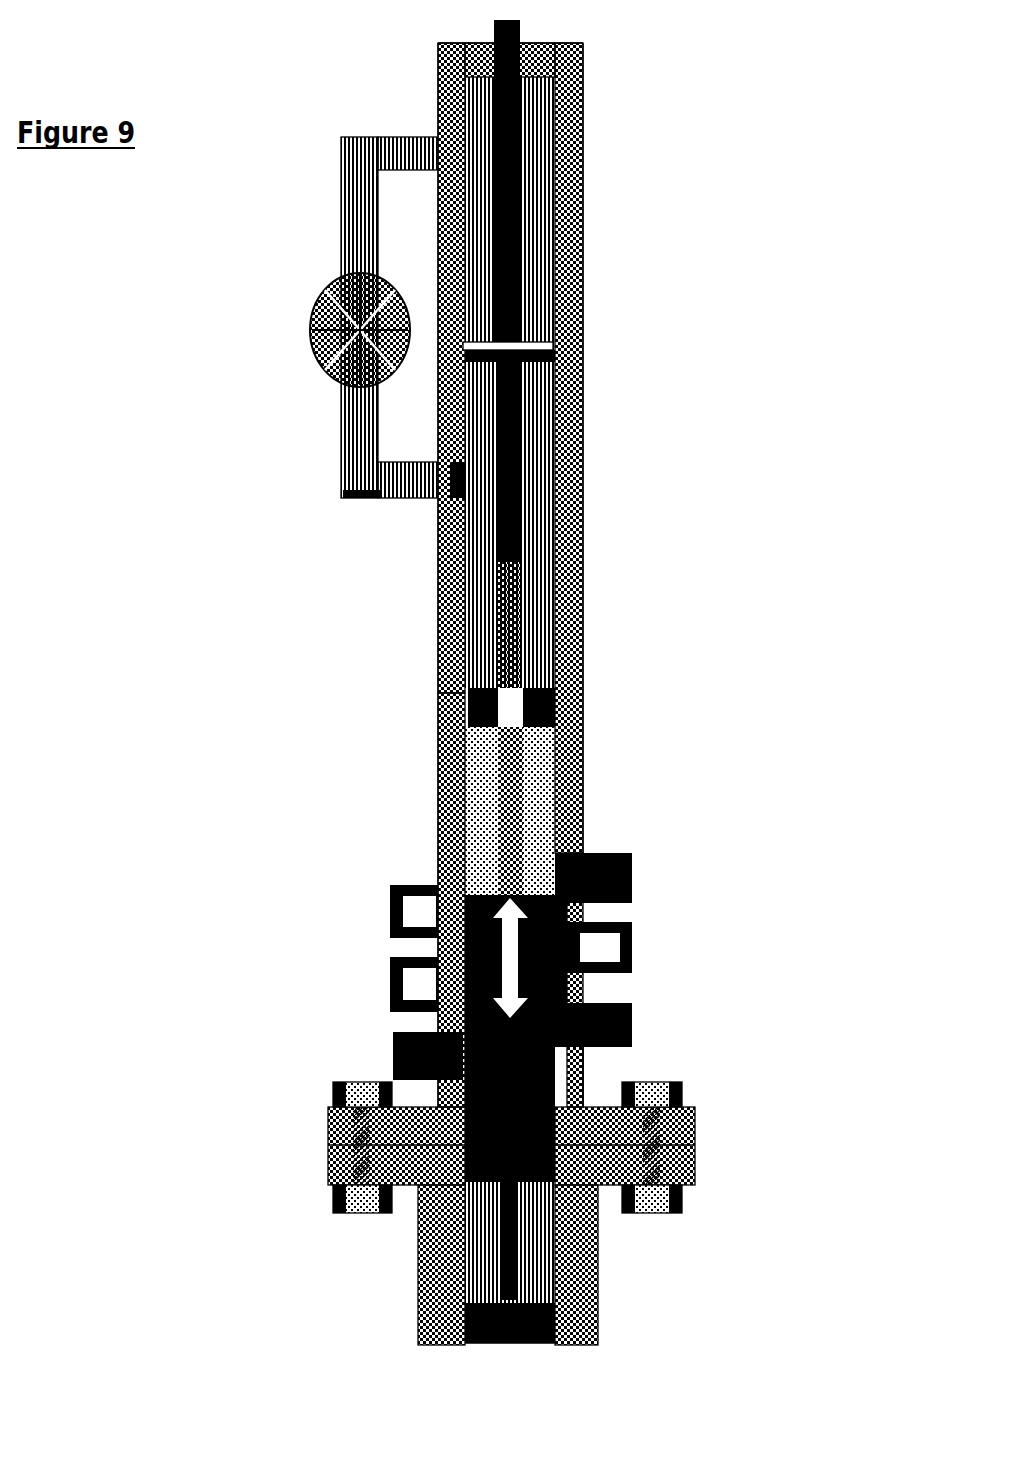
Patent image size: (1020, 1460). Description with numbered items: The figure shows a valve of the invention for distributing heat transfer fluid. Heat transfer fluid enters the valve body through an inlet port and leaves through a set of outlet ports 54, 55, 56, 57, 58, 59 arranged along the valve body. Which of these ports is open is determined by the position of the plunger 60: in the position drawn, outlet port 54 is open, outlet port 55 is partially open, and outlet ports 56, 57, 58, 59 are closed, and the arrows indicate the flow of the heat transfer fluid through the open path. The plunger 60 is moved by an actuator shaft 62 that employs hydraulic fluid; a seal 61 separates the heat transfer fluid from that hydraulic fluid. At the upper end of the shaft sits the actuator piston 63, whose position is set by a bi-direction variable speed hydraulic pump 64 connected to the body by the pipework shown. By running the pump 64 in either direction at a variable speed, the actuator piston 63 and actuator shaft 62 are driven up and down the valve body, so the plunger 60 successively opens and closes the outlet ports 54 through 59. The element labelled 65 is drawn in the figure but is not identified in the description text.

The outlet port 54 is at (393, 1057).
The outlet port 55 is at (632, 1023).
The outlet port 56 is at (390, 979).
The outlet port 57 is at (632, 947).
The outlet port 58 is at (390, 916).
The outlet port 59 is at (632, 855).
The plunger 60 is at (587, 988).
The seal 61 is at (438, 707).
The actuator shaft 62 is at (438, 591).
The actuator piston 63 is at (583, 348).
The bi-direction variable speed hydraulic pump 64 is at (312, 332).
The upper right port block 65 is at (632, 883).